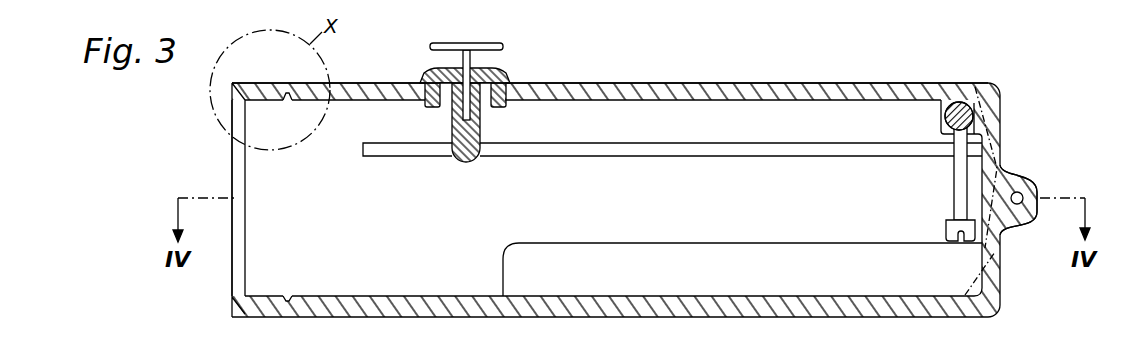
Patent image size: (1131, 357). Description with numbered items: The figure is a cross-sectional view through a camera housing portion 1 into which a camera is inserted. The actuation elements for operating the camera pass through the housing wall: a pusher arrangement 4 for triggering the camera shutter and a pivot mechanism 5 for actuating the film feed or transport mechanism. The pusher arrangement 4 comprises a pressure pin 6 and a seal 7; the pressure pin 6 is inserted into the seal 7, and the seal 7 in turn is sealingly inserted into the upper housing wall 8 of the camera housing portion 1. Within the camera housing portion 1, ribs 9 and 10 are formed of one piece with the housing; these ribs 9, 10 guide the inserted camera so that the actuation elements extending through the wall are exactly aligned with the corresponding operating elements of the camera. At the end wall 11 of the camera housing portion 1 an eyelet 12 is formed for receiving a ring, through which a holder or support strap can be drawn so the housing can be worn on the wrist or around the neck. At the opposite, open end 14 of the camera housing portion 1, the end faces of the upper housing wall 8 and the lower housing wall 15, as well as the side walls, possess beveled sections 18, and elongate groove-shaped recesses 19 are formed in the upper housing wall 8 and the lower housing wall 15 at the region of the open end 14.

The camera housing portion 1 is at (708, 70).
The pusher arrangement 4 is at (422, 63).
The pivot mechanism 5 is at (973, 78).
The pressure pin 6 is at (470, 55).
The seal 7 is at (503, 72).
The upper housing wall 8 is at (630, 92).
The rib 9 is at (772, 150).
The rib 10 is at (718, 278).
The end wall 11 is at (1000, 140).
The eyelet 12 is at (1022, 178).
The open end 14 is at (208, 175).
The lower housing wall 15 is at (472, 317).
The beveled sections 18 is at (243, 97).
The elongate groove-shaped recesses 19 is at (287, 83).